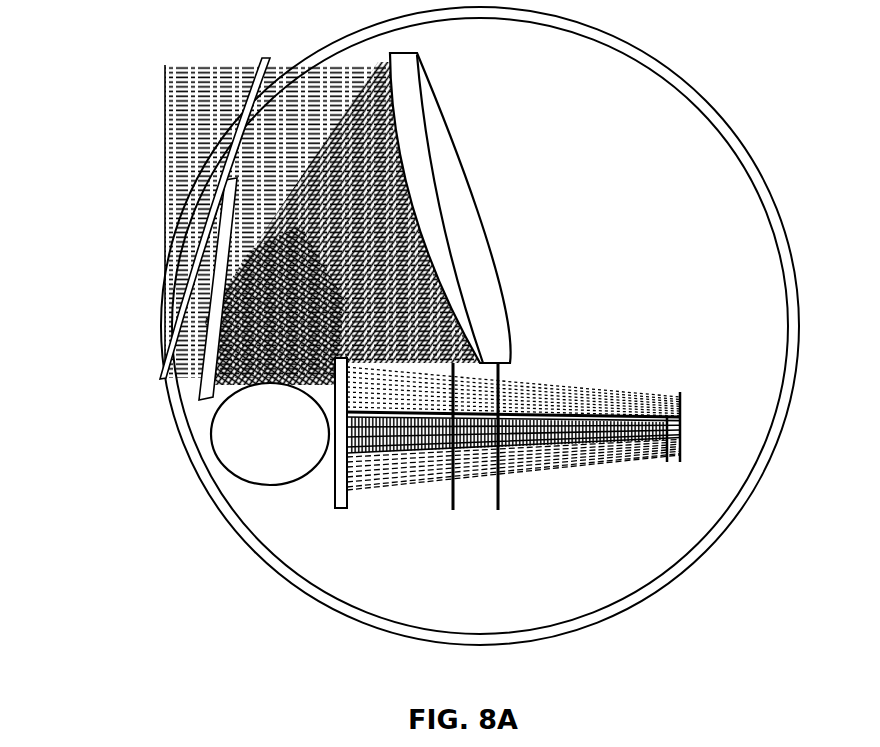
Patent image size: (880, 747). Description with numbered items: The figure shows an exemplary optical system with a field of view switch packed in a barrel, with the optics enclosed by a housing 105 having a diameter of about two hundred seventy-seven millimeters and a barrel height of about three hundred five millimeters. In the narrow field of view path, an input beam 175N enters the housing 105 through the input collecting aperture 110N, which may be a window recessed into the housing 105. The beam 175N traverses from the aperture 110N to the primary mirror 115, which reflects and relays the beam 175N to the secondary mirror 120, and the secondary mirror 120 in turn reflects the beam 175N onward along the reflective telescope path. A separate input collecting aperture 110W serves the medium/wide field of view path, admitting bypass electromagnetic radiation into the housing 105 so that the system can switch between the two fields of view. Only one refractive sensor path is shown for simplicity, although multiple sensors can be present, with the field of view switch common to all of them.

The housing 105 is at (720, 191).
The input collecting aperture 110N is at (267, 58).
The input collecting aperture 110W is at (215, 455).
The primary mirror 115 is at (447, 147).
The secondary mirror 120 is at (192, 388).
The input beam 175N is at (135, 50).